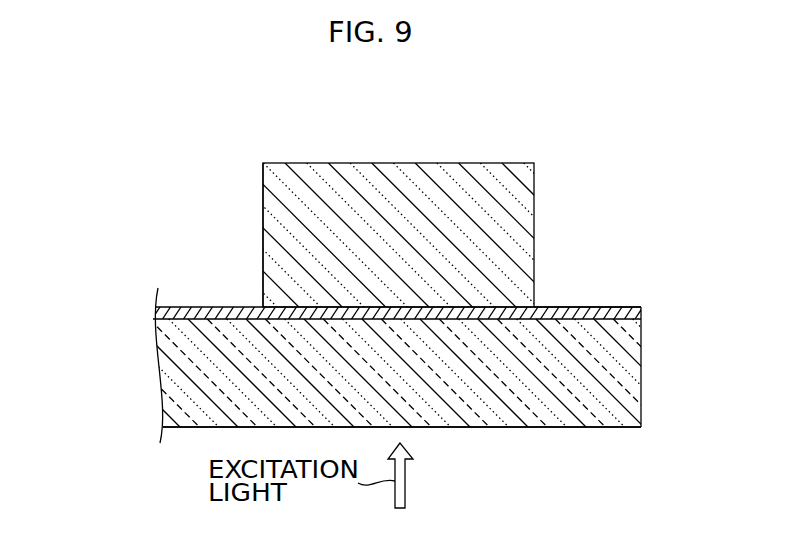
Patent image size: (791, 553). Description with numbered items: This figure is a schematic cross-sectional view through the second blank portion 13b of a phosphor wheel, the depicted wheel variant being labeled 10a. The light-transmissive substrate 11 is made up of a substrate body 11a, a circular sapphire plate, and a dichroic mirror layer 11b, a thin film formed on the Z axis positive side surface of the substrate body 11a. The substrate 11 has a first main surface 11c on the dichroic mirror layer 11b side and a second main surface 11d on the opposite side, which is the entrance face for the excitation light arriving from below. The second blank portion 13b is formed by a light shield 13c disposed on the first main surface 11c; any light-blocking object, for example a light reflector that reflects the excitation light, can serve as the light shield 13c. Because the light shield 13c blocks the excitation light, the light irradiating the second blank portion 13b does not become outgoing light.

The wavelength conversion member 10a is at (190, 140).
The substrate 11 is at (88, 305).
The substrate body 11a is at (158, 376).
The dichroic mirror layer 11b is at (156, 312).
The first main surface 11c is at (578, 304).
The second main surface 11d is at (588, 432).
The second blank portion 13b is at (406, 158).
The light shield 13c is at (277, 235).